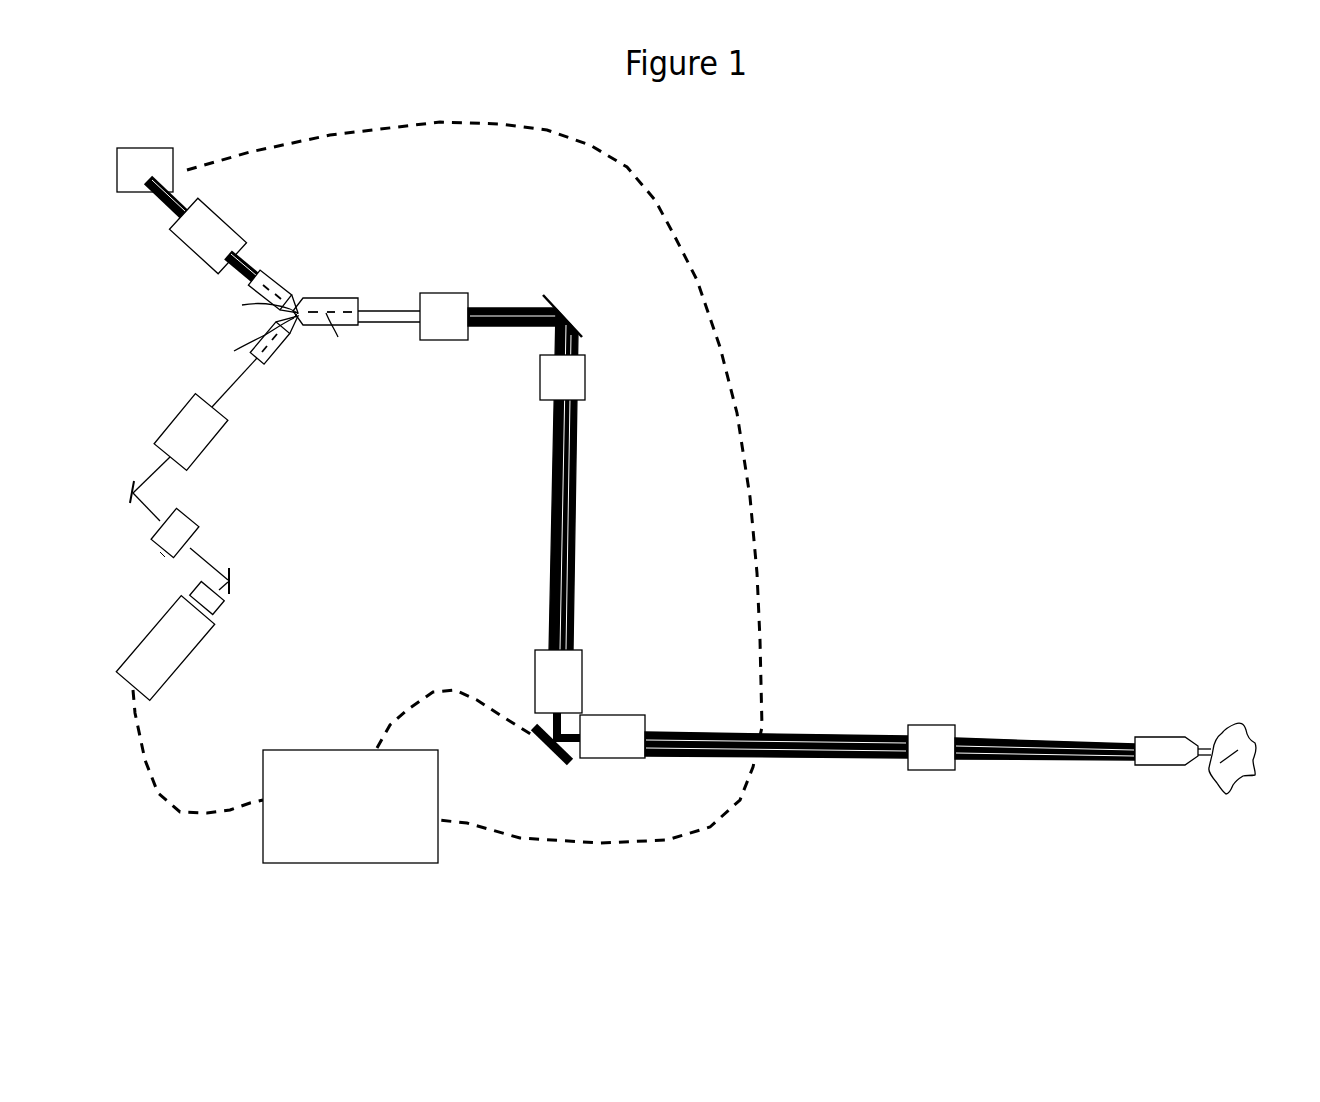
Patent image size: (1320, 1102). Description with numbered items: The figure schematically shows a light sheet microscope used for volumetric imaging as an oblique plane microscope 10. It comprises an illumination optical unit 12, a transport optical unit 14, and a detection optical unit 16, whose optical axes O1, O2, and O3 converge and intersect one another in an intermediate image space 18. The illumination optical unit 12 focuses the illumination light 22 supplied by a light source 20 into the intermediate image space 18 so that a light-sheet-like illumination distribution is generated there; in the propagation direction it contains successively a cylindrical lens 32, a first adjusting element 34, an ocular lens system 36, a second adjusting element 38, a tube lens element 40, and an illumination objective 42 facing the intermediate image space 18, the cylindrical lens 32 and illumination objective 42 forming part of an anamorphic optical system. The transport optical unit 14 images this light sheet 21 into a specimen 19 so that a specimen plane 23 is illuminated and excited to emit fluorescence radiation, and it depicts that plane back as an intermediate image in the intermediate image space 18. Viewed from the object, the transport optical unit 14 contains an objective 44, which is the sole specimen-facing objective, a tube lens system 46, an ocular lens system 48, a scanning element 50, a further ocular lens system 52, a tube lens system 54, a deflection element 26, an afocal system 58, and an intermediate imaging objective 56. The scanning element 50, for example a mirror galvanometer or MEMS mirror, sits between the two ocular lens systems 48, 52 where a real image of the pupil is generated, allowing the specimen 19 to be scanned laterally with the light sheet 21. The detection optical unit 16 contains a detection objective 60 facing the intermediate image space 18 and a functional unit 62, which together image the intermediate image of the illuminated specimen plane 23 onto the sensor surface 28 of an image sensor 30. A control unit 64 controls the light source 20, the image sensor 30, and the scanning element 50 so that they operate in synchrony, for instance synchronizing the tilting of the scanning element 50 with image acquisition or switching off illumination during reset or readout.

The oblique plane microscope 10 is at (797, 284).
The illumination optical unit 12 is at (260, 476).
The transport optical unit 14 is at (836, 624).
The detection optical unit 16 is at (172, 262).
The intermediate image space 18 is at (292, 313).
The specimen 19 is at (1257, 742).
The light source 20 is at (172, 677).
The light sheet 21 is at (1242, 777).
The specimen plane 23 is at (1233, 761).
The illumination light 22 is at (192, 547).
The deflection element 26 is at (565, 310).
The sensor surface 28 is at (150, 183).
The image sensor 30 is at (148, 148).
The cylindrical lens 32 is at (192, 592).
The first adjusting element 34 is at (232, 582).
The ocular lens system 36 is at (162, 553).
The second adjusting element 38 is at (130, 496).
The tube lens element 40 is at (208, 452).
The illumination objective 42 is at (287, 338).
The objective 44 is at (1166, 737).
The tube lens system 46 is at (932, 726).
The ocular lens system 48 is at (597, 758).
The scanning element 50 is at (560, 760).
The ocular lens system 52 is at (535, 688).
The tube lens system 54 is at (586, 378).
The intermediate imaging objective 56 is at (335, 298).
The afocal system 58 is at (446, 293).
The detection objective 60 is at (272, 278).
The functional unit 62 is at (224, 216).
The control unit 64 is at (363, 863).
The optical axis O1 is at (253, 343).
The optical axis O2 is at (349, 338).
The optical axis O3 is at (249, 316).